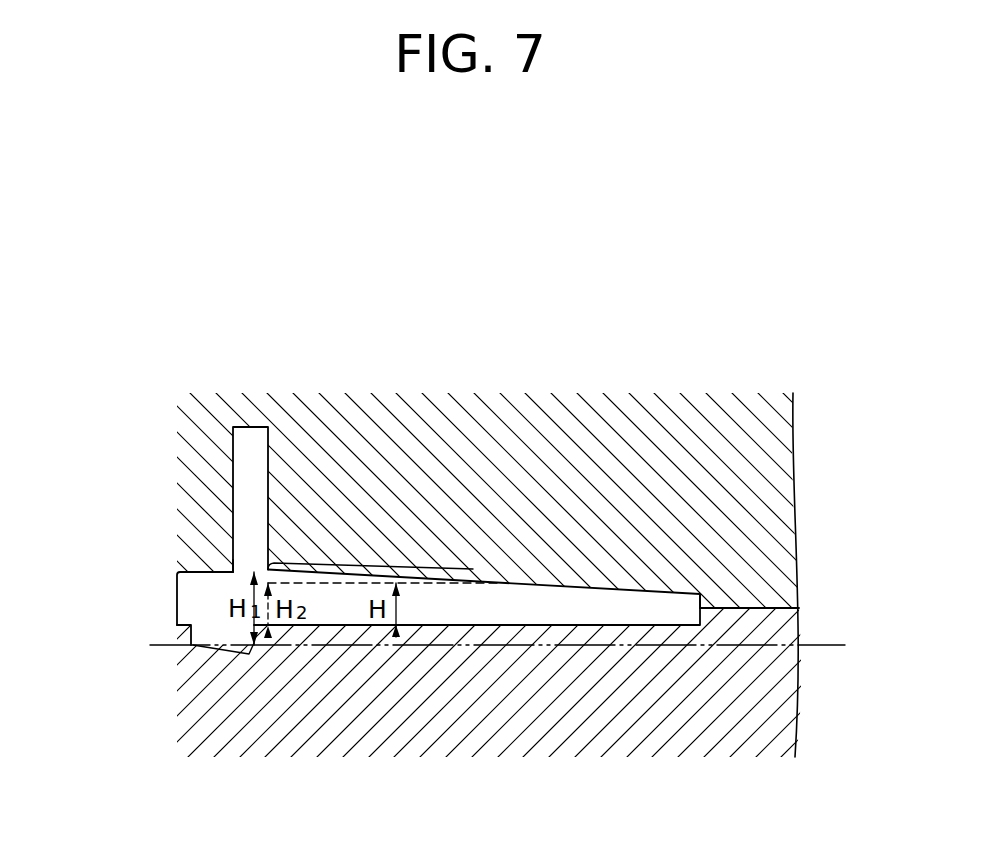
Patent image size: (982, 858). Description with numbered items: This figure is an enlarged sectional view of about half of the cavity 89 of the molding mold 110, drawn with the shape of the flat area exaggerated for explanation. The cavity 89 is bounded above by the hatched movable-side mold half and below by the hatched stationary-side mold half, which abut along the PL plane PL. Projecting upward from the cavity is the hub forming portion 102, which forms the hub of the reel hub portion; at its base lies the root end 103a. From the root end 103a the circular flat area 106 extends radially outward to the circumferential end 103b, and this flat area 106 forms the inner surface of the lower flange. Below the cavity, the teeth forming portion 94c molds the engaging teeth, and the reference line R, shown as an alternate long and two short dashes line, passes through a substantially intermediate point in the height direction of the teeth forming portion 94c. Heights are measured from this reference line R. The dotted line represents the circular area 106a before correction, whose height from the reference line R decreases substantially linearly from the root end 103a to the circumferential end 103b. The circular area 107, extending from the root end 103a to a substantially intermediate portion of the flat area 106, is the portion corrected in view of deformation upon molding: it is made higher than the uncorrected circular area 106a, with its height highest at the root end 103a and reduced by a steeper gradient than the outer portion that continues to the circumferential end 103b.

The molding mold 110 is at (592, 390).
The cavity 89 is at (212, 600).
The hub forming portion 102 is at (249, 437).
The circular area 107 is at (370, 562).
The flat area 106 is at (648, 594).
The circular area before the correction 106a is at (338, 584).
The root end 103a is at (233, 570).
The circumferential end 103b is at (700, 593).
The PL plane PL is at (778, 605).
The teeth forming portion 94c is at (215, 640).
The reference line R is at (588, 648).